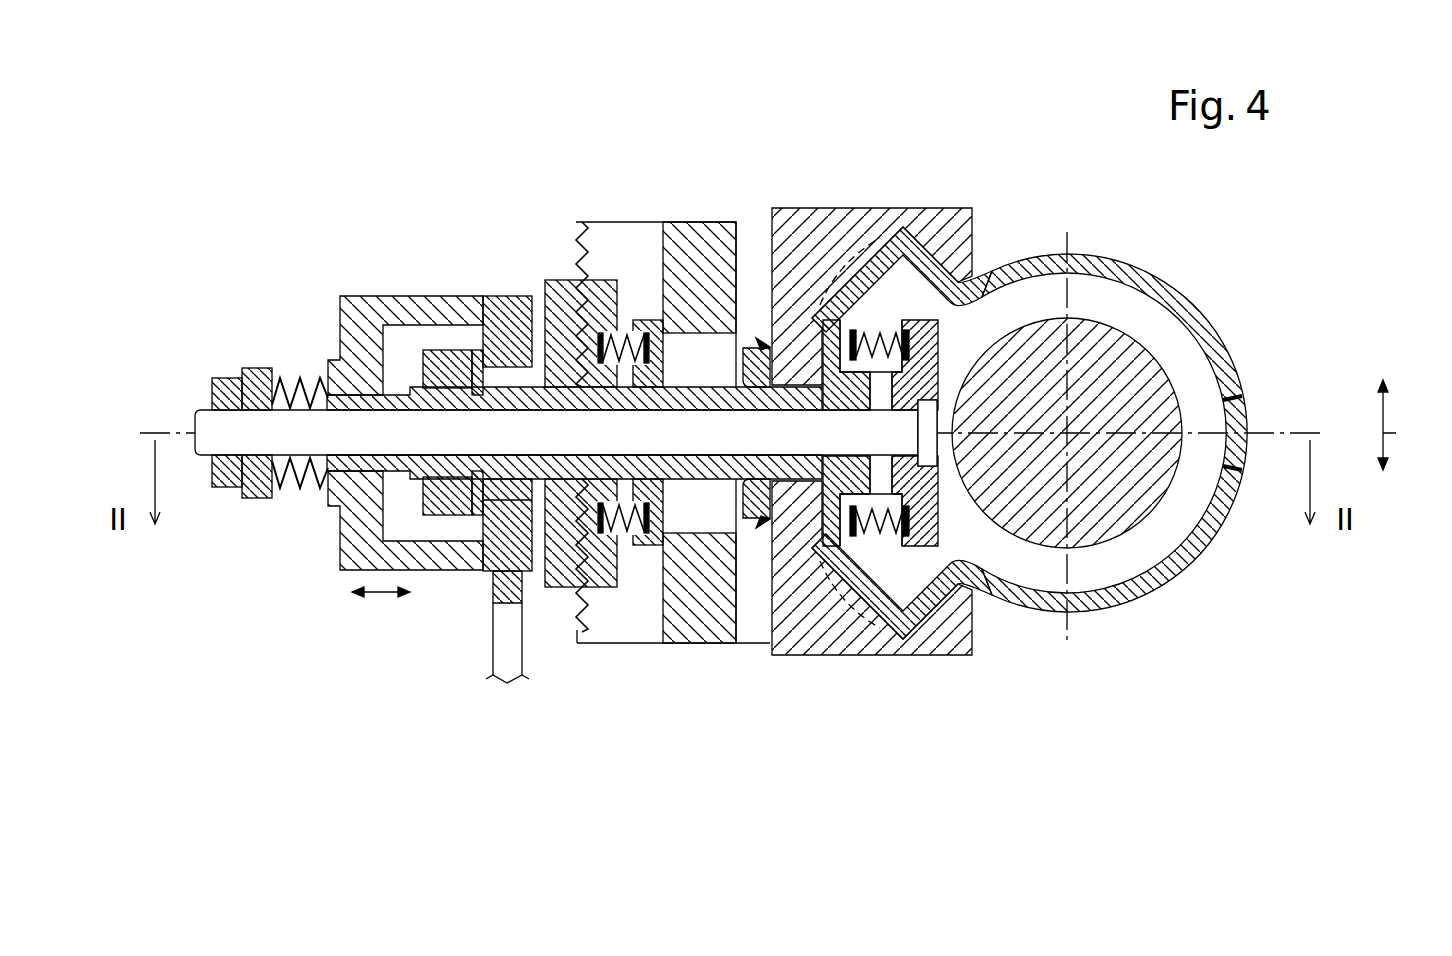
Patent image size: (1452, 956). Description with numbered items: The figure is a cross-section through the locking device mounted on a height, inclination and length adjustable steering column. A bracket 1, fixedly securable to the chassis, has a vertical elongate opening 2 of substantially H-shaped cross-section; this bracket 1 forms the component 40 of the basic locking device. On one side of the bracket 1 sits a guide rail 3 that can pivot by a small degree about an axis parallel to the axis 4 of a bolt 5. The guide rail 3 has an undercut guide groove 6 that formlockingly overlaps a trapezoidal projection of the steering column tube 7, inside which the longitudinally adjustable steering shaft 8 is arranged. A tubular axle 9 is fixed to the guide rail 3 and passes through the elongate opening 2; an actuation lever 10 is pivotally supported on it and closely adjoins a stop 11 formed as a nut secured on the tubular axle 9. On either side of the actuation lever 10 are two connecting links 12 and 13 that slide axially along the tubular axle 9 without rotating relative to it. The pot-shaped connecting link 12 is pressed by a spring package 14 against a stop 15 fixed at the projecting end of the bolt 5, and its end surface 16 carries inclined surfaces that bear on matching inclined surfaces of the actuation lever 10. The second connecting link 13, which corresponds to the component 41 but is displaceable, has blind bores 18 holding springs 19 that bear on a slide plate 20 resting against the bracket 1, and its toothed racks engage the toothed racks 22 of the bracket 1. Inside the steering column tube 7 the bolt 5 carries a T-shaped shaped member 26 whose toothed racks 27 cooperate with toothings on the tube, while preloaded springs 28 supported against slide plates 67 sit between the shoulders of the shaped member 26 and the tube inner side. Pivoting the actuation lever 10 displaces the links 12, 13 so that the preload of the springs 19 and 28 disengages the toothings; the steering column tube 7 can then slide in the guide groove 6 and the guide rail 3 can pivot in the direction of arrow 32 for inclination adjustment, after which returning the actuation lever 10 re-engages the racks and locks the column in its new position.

The bracket 1 is at (695, 237).
The vertical elongate opening 2 is at (713, 517).
The guide rail 3 is at (950, 216).
The axis 4 is at (262, 498).
The bolt 5 is at (312, 447).
The undercut guide groove 6 is at (913, 240).
The steering column tube 7 is at (1210, 338).
The steering shaft 8 is at (1155, 403).
The tubular axle 9 is at (758, 480).
The actuation lever 10 is at (511, 662).
The stop 11 is at (437, 507).
The connecting link 12 is at (364, 310).
The second connecting link 13 is at (563, 280).
The spring package 14 is at (312, 392).
The stop 15 is at (223, 378).
The end surface 16 is at (477, 305).
The blind bores 18 is at (610, 536).
The springs 19 is at (625, 340).
The slide plate 20 is at (650, 322).
The toothed racks 22 is at (578, 630).
The shaped member 26 is at (973, 262).
The toothed racks 27 is at (913, 553).
The preloaded springs 28 is at (883, 338).
The arrow 32 is at (1413, 425).
The component 40 is at (678, 630).
The component 41 is at (556, 582).
The slide plates 67 is at (847, 530).